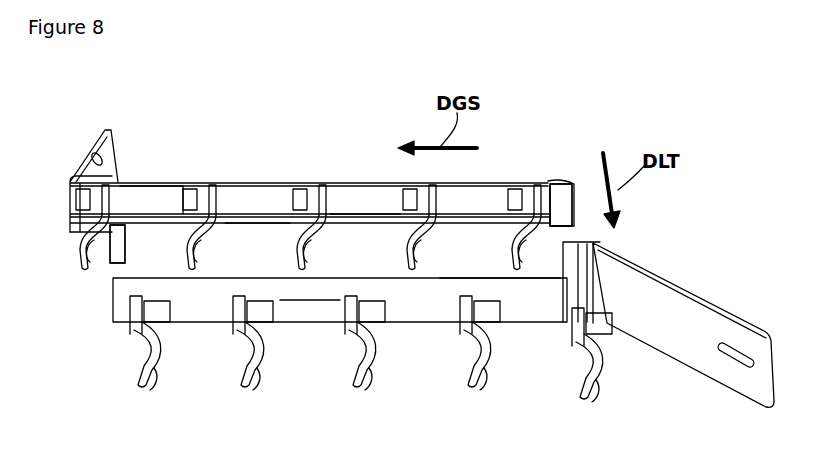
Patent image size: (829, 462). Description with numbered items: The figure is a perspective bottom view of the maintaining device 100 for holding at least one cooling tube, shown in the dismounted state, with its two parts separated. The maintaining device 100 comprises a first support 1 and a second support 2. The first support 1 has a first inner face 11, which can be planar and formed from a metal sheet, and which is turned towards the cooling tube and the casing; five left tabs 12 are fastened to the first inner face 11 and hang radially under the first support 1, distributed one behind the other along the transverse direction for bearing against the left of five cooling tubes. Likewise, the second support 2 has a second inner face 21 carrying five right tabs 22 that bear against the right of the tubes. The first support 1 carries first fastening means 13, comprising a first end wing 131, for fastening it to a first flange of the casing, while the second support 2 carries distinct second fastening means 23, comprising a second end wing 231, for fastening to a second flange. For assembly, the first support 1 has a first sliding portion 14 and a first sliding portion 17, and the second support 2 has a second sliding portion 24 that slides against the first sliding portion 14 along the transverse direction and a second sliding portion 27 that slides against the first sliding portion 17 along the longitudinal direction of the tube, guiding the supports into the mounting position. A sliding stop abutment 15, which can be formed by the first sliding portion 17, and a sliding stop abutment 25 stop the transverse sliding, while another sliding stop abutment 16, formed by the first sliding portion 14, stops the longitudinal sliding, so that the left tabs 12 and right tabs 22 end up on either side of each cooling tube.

The maintaining device 100 is at (508, 102).
The first support 1 is at (250, 199).
The first inner face 11 is at (143, 188).
The left tab 12 is at (78, 250).
The first fastening means 13 is at (84, 150).
The first end wing 131 is at (112, 170).
The first sliding portion 14 is at (347, 224).
The sliding stop abutment 15 is at (118, 264).
The other sliding stop abutment 16 is at (234, 224).
The first sliding portion 17 is at (341, 223).
The second support 2 is at (204, 302).
The second inner face 21 is at (303, 308).
The right tab 22 is at (152, 380).
The second fastening means 23 is at (684, 282).
The second end wing 231 is at (678, 333).
The second sliding portion 24 is at (448, 280).
The sliding stop abutment 25 is at (579, 190).
The second sliding portion 27 is at (113, 284).